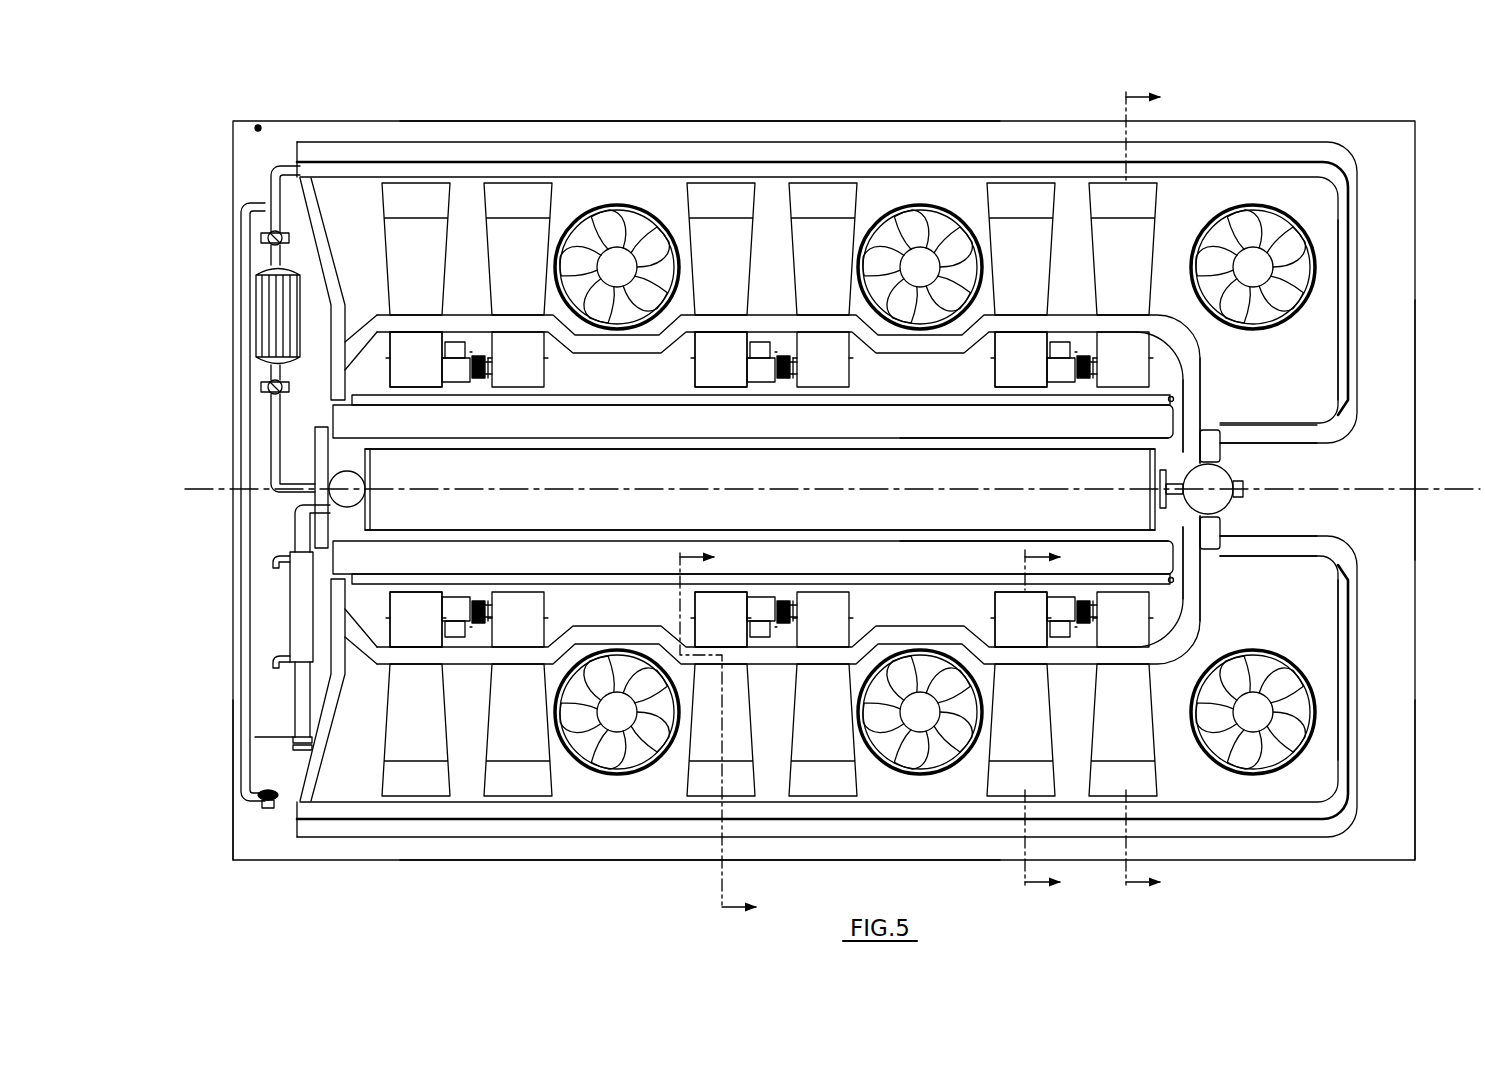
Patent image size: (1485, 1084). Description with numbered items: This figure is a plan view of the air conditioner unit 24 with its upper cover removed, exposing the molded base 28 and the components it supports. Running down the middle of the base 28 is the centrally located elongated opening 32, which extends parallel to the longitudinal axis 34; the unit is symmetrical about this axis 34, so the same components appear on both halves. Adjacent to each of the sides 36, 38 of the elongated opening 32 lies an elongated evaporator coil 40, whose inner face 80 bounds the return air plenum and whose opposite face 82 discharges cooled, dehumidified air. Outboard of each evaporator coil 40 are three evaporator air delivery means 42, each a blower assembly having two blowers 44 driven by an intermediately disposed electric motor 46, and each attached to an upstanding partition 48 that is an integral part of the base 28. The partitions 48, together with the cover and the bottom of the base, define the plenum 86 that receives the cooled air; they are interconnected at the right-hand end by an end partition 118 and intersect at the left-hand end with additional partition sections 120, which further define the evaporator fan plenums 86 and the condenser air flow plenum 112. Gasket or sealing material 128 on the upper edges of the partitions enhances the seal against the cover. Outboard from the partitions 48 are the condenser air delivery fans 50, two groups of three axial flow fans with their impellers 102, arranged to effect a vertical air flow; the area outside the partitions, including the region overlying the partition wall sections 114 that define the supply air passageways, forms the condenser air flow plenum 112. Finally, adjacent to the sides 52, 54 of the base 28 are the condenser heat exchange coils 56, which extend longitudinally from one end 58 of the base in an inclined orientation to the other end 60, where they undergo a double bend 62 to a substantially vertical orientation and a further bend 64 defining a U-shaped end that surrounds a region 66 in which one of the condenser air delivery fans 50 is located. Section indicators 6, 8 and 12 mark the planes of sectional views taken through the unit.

The air conditioner unit 24 is at (455, 115).
The base 28 is at (1398, 432).
The elongated opening 32 is at (797, 501).
The longitudinal axis 34 is at (212, 488).
The side of the elongated opening 36 is at (688, 449).
The side of the elongated opening 38 is at (703, 531).
The evaporator coil 40 is at (585, 430).
The evaporator air delivery means 42 is at (690, 362).
The blower 44 is at (403, 372).
The electric motor 46 is at (460, 387).
The partition 48 is at (388, 313).
The condenser air delivery fan 50 is at (590, 232).
The side of the base 52 is at (775, 132).
The side of the base 54 is at (690, 860).
The condenser heat exchange coil 56 is at (585, 133).
The end of the base 58 is at (240, 822).
The other end of the base 60 is at (1415, 812).
The outer channel 62 is at (1345, 142).
The further bend 64 is at (1340, 445).
The region 66 is at (1256, 368).
The face of the evaporator coil 80 is at (963, 440).
The opposite face of the evaporator coil 82 is at (905, 400).
The plenum 86 is at (651, 391).
The fan impeller 102 is at (650, 232).
The condenser air flow plenum 112 is at (772, 185).
The partition wall section 114 is at (527, 285).
The end partition 118 is at (1192, 405).
The additional partition section 120 is at (335, 365).
The gasket or sealing material 128 is at (1192, 590).
The section line 6 is at (1026, 721).
The section line 8 is at (1126, 491).
The section line 12 is at (694, 733).